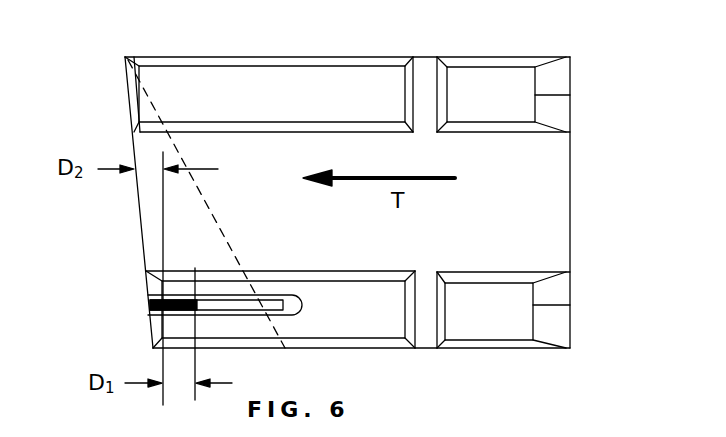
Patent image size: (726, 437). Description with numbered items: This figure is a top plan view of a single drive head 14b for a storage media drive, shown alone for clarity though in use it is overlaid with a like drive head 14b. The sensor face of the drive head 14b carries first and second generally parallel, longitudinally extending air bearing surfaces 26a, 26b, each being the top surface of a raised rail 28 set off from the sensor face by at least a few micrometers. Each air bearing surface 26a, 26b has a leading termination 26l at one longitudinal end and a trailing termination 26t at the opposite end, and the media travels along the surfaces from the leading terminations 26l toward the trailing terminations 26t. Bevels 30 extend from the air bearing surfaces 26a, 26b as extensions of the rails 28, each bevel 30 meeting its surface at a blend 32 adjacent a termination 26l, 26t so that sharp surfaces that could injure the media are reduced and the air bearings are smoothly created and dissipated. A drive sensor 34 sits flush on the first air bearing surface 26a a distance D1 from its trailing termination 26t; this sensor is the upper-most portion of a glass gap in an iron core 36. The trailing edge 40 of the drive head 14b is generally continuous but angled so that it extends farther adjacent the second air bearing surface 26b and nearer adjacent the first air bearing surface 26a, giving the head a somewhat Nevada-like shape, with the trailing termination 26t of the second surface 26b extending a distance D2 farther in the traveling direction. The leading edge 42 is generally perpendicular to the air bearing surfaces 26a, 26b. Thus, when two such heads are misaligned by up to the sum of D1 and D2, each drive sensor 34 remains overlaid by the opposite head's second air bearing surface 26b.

The drive head 14b is at (524, 220).
The first air bearing surface 26a is at (378, 325).
The second air bearing surface 26b is at (332, 99).
The trailing termination 26t is at (138, 73).
The leading termination 26l is at (550, 113).
The raised rail 28 is at (503, 102).
The bevel 30 is at (130, 80).
The blend 32 is at (134, 109).
The drive sensor 34 is at (197, 300).
The iron core 36 is at (268, 297).
The trailing edge 40 is at (139, 212).
The leading edge 42 is at (572, 213).